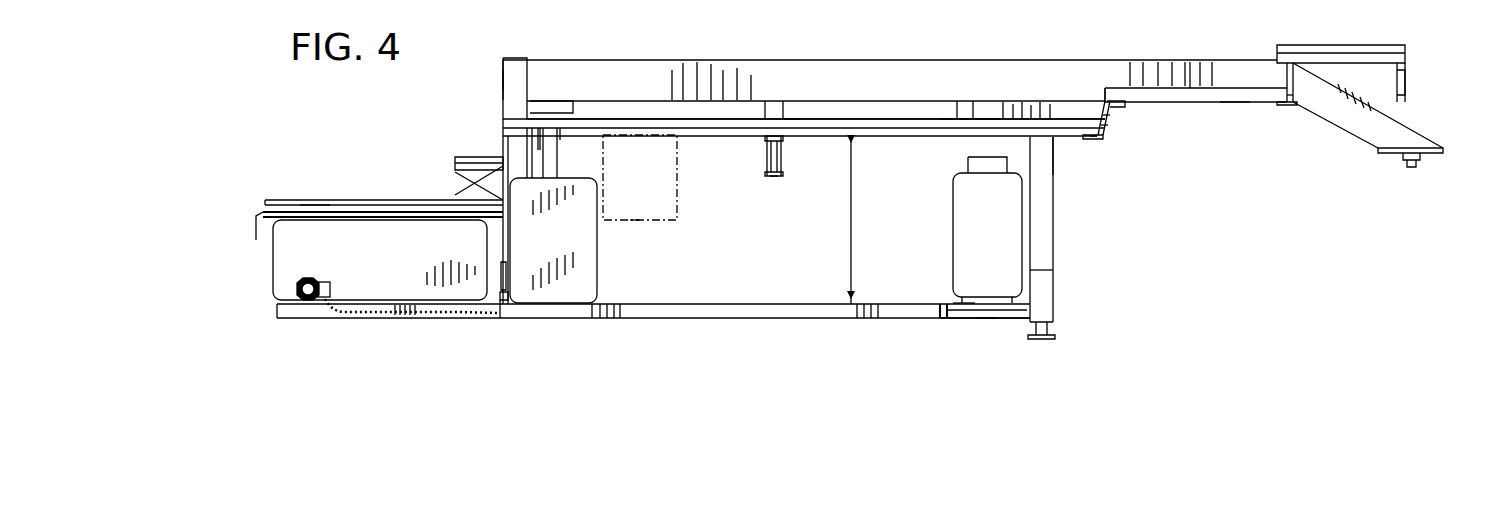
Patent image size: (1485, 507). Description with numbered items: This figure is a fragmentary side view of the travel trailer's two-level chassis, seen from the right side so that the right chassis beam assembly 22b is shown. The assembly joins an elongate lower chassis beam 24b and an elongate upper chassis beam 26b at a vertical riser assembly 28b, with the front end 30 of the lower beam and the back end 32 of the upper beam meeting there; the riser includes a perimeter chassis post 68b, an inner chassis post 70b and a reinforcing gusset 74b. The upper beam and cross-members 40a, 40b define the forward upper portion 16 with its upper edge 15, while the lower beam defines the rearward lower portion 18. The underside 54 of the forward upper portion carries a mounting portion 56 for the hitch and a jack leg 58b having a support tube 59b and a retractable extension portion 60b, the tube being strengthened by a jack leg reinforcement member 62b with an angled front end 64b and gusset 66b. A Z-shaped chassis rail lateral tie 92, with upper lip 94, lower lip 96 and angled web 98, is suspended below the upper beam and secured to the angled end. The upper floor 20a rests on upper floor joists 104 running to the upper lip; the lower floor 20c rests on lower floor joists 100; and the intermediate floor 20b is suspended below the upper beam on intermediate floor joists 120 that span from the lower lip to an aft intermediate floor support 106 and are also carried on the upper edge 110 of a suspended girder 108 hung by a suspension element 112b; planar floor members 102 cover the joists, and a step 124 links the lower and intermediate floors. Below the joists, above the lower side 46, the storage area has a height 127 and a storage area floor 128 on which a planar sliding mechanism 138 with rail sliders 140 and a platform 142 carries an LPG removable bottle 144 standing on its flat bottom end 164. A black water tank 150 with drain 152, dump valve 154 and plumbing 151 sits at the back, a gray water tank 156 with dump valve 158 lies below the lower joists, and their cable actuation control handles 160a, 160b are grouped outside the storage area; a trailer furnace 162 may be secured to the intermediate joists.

The upper edge 15 is at (692, 60).
The forward upper portion 16 is at (1235, 60).
The rearward lower portion 18 is at (280, 200).
The upper floor 20a is at (1190, 88).
The intermediate floor 20b is at (867, 118).
The lower floor 20c is at (315, 205).
The right chassis beam assembly 22b is at (498, 57).
The lower chassis beam 24b is at (308, 208).
The upper chassis beam 26b is at (1105, 85).
The vertical riser assembly 28b is at (512, 143).
The front end 30 is at (1405, 72).
The back end 32 is at (527, 58).
The chassis cross-member 40a is at (1428, 86).
The chassis cross-member 40b is at (1285, 105).
The lower side 46 is at (702, 318).
The underside 54 is at (783, 128).
The mounting portion 56 is at (1387, 135).
The jack leg 58b is at (1090, 280).
The support tube 59b is at (1047, 265).
The retractable extension portion 60b is at (1050, 325).
The jack leg reinforcement member 62b is at (1093, 107).
The angled front end 64b is at (1112, 122).
The gusset 66b is at (1055, 170).
The perimeter chassis post 68b is at (506, 78).
The inner chassis post 70b is at (512, 163).
The reinforcing gusset 74b is at (562, 137).
The chassis rail lateral tie 92 is at (1098, 136).
The upper lip 94 is at (1127, 116).
The lower lip 96 is at (1097, 139).
The angled web 98 is at (1107, 127).
The lower floor joists 100 is at (256, 238).
The planar floor members 102 is at (973, 123).
The upper floor joists 104 is at (1233, 103).
The aft intermediate floor support 106 is at (575, 172).
The suspended girder 108 is at (772, 178).
The upper edge 110 is at (783, 170).
The suspension element 112b is at (773, 100).
The intermediate floor joists 120 is at (920, 133).
The step 124 is at (478, 182).
The height 127 is at (851, 232).
The storage area floor 128 is at (687, 303).
The planar sliding mechanism 138 is at (988, 360).
The rail sliders 140 is at (1030, 323).
The platform 142 is at (1007, 325).
The LPG removable bottle 144 is at (987, 230).
The black water tank 150 is at (553, 240).
The plumbing 151 is at (495, 320).
The drain 152 is at (557, 140).
The black water tank dump valve 154 is at (503, 268).
The gray water tank 156 is at (380, 260).
The gray water tank dump valve 158 is at (320, 298).
The cable actuation control handle 160a is at (462, 320).
The cable actuation control handle 160b is at (482, 320).
The trailer furnace 162 is at (635, 222).
The flat bottom end 164 is at (962, 302).